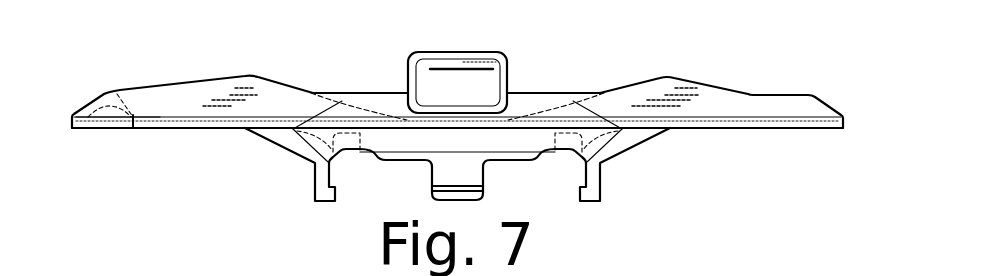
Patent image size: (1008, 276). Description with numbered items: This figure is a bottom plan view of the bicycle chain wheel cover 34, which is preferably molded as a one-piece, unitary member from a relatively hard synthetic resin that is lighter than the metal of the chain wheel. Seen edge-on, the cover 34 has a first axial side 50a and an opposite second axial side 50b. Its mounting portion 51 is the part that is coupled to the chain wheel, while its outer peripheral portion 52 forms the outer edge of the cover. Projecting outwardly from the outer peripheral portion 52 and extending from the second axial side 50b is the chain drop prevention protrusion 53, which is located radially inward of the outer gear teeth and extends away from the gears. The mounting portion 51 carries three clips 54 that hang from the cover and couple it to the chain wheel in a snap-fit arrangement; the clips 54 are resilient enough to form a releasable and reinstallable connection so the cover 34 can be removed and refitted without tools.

The chain wheel cover 34 is at (757, 71).
The first axial side 50a is at (158, 128).
The second axial side 50b is at (522, 93).
The mounting portion 51 is at (595, 106).
The outer peripheral portion 52 is at (677, 106).
The chain drop prevention protrusion 53 is at (452, 53).
The clips 54 is at (315, 181).